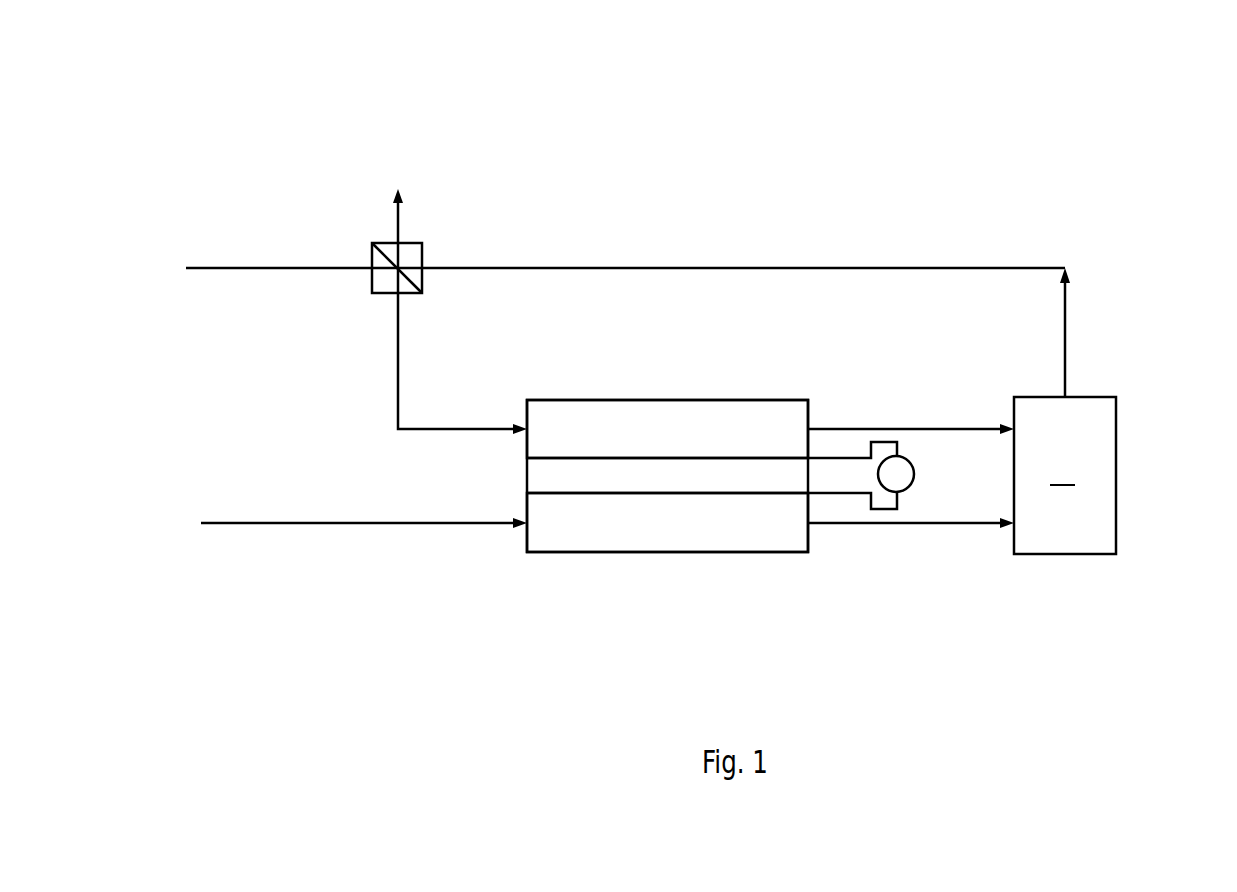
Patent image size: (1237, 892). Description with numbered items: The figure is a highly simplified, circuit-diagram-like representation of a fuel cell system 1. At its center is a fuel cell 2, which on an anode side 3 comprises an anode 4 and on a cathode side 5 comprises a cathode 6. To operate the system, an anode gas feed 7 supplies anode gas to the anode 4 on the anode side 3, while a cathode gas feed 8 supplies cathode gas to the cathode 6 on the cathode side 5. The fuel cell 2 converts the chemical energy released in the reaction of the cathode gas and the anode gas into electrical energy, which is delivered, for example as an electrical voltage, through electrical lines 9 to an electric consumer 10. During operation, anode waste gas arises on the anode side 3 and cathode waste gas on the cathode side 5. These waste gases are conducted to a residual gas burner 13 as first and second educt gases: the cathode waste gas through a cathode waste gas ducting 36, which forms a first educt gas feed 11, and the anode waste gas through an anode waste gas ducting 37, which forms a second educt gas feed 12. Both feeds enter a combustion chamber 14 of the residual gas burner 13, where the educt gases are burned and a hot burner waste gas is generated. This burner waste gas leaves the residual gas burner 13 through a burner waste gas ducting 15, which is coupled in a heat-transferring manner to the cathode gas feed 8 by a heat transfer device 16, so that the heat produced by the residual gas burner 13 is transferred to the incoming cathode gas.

The fuel cell system 1 is at (1150, 246).
The fuel cell 2 is at (667, 460).
The anode side 3 is at (598, 523).
The anode 4 is at (668, 493).
The cathode side 5 is at (598, 427).
The cathode 6 is at (668, 457).
The anode gas feed 7 is at (318, 520).
The cathode gas feed 8 is at (463, 425).
The electrical lines 9 is at (911, 478).
The electric consumer 10 is at (914, 474).
The first educt gas feed 11 is at (911, 394).
The cathode waste gas ducting 36 is at (892, 427).
The second educt gas feed 12 is at (911, 560).
The anode waste gas ducting 37 is at (893, 526).
The residual gas burner 13 is at (1117, 475).
The combustion chamber 14 is at (1128, 472).
The burner waste gas ducting 15 is at (1066, 330).
The heat transfer device 16 is at (422, 243).